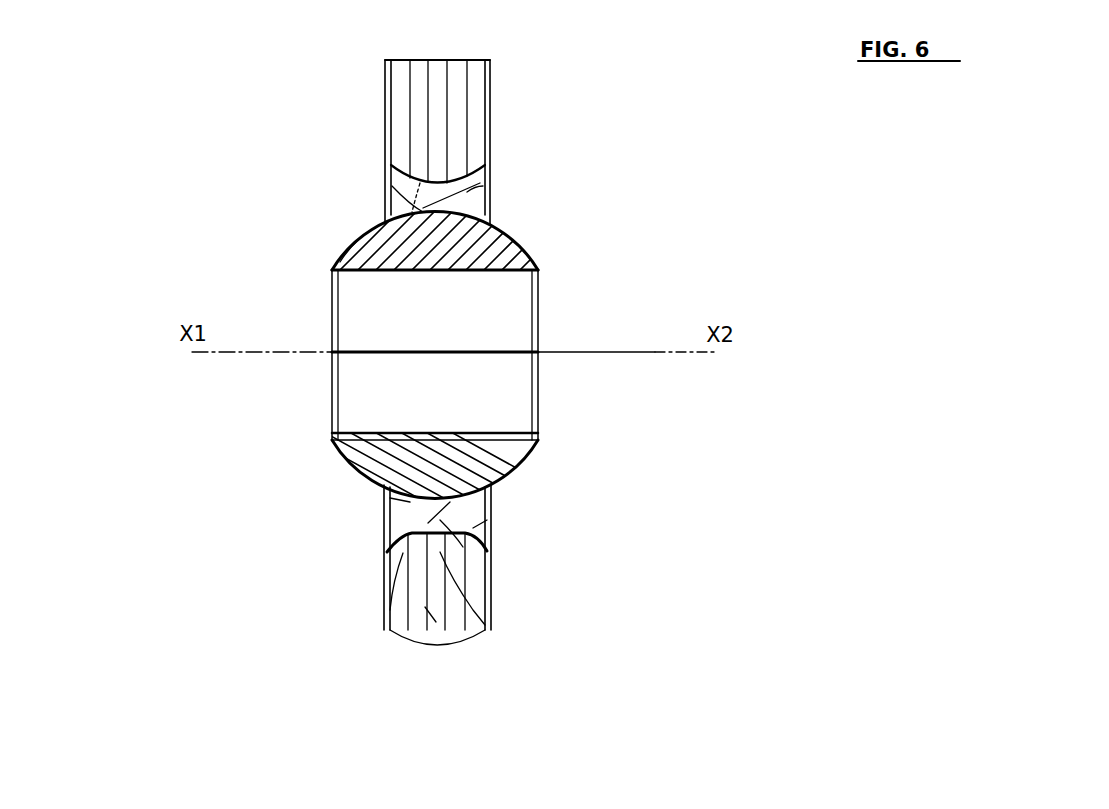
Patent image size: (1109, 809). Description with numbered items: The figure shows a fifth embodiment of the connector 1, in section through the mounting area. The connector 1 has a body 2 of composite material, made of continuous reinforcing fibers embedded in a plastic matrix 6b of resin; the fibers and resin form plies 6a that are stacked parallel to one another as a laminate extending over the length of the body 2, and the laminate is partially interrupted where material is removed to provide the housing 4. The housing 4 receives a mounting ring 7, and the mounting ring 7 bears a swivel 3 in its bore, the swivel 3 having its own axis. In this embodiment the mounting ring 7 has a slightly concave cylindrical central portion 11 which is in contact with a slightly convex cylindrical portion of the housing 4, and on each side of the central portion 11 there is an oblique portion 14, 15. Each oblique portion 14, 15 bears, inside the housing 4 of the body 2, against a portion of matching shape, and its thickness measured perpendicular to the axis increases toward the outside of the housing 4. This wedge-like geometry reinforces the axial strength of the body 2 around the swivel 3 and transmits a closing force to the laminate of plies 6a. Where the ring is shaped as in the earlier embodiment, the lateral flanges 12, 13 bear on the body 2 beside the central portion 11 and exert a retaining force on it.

The connector 1 is at (118, 200).
The body 2 is at (425, 607).
The swivel 3 is at (503, 253).
The housing 4 is at (345, 248).
The plies 6a is at (450, 88).
The plastic matrix 6b is at (457, 115).
The mounting ring 7 is at (470, 190).
The central portion 11 is at (463, 622).
The lateral flange 12 is at (519, 358).
The lateral flange 13 is at (385, 488).
The oblique portion 14 is at (488, 578).
The oblique portion 15 is at (383, 613).